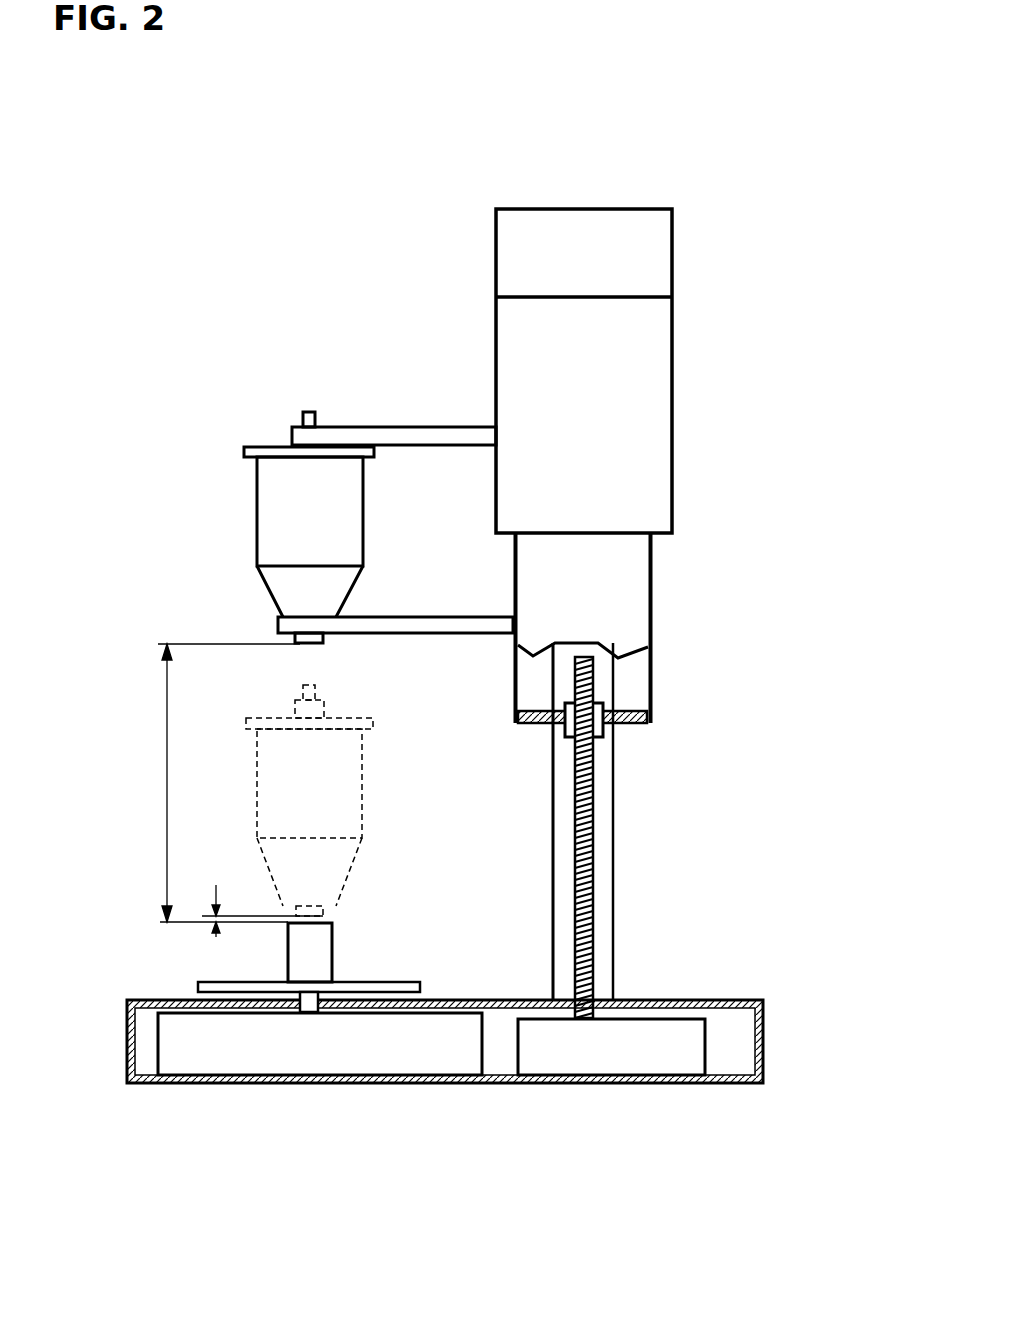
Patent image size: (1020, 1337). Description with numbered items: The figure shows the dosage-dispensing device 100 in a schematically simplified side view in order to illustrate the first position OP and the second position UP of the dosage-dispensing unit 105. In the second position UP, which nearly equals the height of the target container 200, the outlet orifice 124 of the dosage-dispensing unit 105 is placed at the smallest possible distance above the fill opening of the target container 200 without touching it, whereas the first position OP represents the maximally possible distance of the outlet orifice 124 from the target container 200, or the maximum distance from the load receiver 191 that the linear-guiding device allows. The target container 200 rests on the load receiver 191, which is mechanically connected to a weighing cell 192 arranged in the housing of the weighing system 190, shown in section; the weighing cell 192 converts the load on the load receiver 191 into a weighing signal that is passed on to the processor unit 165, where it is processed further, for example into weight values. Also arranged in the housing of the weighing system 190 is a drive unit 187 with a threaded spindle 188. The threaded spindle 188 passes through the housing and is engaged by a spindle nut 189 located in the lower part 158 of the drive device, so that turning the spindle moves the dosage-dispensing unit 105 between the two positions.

The dosage-dispensing device 100 is at (287, 267).
The dosage-dispensing unit 105 is at (378, 522).
The outlet orifice 124 is at (303, 649).
The lower part 158 is at (583, 766).
The processor unit 165 is at (584, 371).
The drive unit 187 is at (611, 1047).
The threaded spindle 188 is at (593, 833).
The spindle nut 189 is at (605, 730).
The weighing system 190 is at (471, 1000).
The load receiver 191 is at (385, 987).
The weighing cell 192 is at (320, 1044).
The target container 200 is at (307, 950).